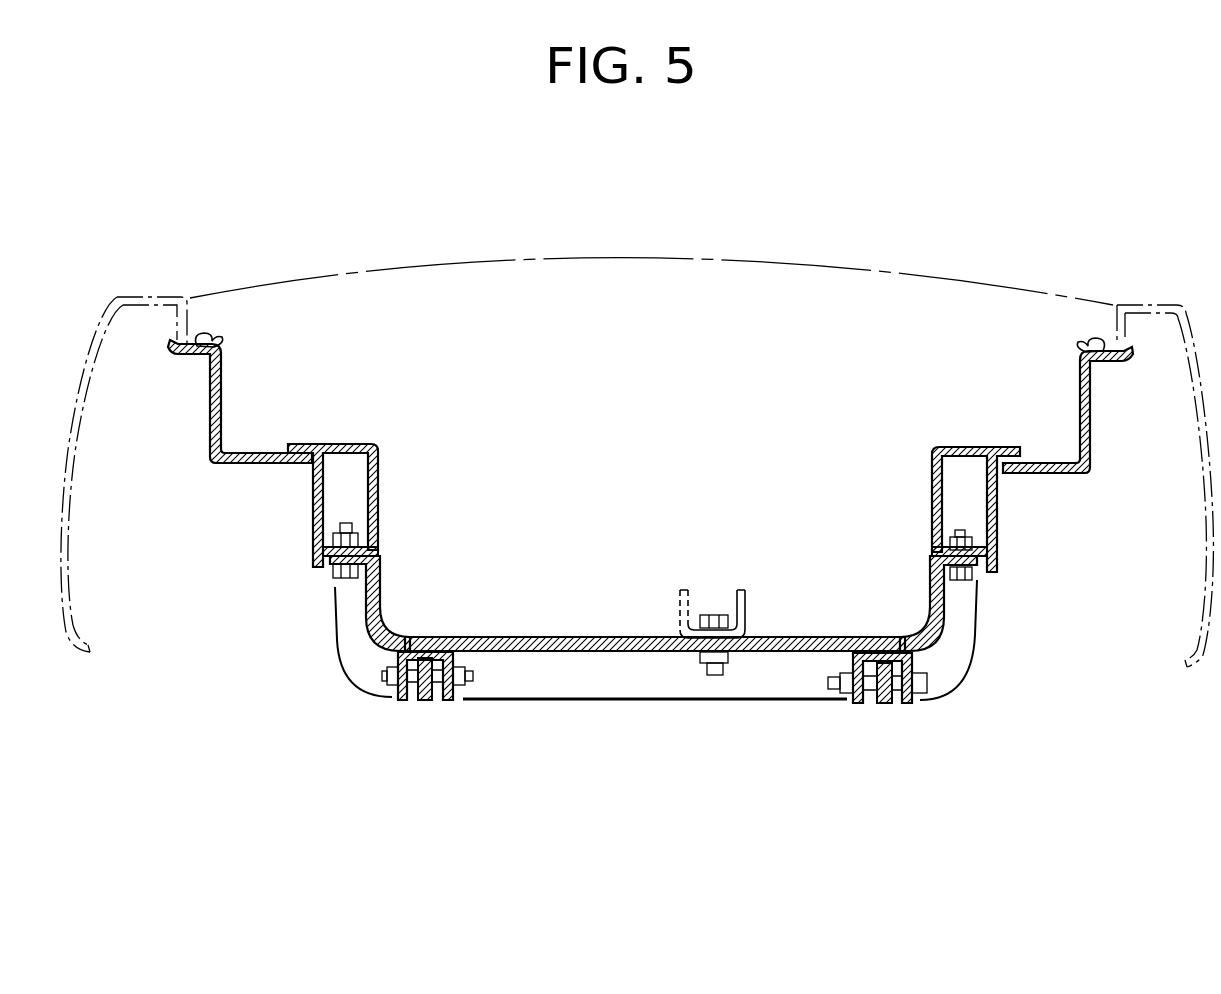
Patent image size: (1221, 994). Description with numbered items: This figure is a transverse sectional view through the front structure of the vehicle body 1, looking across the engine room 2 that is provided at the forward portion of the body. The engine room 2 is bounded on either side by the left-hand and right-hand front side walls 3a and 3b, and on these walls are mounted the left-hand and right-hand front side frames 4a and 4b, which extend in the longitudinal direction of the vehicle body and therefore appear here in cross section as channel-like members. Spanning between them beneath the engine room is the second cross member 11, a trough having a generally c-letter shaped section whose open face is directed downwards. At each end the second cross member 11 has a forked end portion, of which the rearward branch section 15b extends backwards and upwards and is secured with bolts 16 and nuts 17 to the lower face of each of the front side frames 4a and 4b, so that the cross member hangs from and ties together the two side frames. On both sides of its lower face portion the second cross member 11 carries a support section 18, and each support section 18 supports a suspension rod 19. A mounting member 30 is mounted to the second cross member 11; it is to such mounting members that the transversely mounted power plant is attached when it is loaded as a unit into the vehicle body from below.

The vehicle body 1 is at (1130, 296).
The engine room 2 is at (641, 432).
The left-hand front side wall 3a is at (212, 388).
The right-hand front side wall 3b is at (1090, 392).
The left-hand front side frame 4a is at (378, 488).
The right-hand front side frame 4b is at (930, 488).
The second cross member 11 is at (603, 653).
The rearward branch section 15b is at (363, 608).
The bolt 16 is at (335, 574).
The nut 17 is at (330, 540).
The support section 18 is at (398, 697).
The suspension rod 19 is at (424, 695).
The mounting member 30 is at (745, 595).